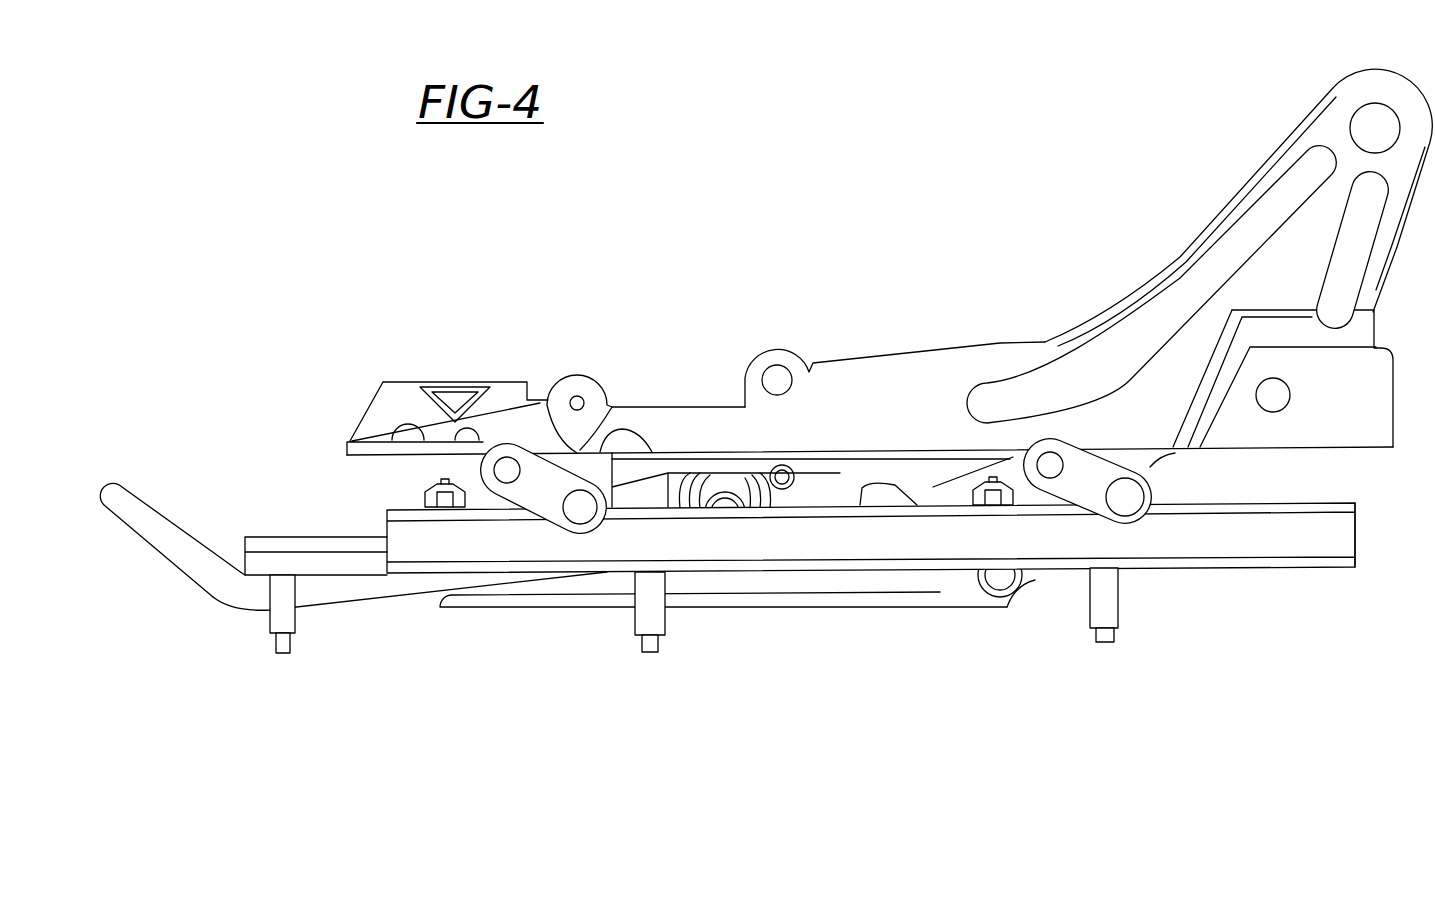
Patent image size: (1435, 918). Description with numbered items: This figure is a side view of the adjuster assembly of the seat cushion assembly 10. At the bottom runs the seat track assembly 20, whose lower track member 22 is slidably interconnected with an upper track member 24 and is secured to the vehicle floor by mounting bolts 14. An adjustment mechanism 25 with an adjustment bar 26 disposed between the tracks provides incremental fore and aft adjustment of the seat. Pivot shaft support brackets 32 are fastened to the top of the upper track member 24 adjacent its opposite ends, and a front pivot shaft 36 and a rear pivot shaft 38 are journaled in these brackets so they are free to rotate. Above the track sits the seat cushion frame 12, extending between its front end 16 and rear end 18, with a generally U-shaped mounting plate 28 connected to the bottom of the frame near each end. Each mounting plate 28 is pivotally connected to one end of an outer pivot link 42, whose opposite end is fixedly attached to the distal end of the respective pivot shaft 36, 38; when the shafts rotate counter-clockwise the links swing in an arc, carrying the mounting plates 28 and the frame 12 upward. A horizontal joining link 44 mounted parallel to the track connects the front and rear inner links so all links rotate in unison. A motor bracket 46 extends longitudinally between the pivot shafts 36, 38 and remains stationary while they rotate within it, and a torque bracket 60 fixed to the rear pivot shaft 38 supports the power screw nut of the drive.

The seat cushion assembly 10 is at (1035, 178).
The seat cushion frame 12 is at (1003, 343).
The mounting bolts 14 is at (298, 627).
The front end 16 is at (347, 444).
The rear end 18 is at (1388, 452).
The seat track assembly 20 is at (1312, 543).
The lower track member 22 is at (262, 536).
The upper track member 24 is at (1340, 572).
The adjustment mechanism 25 is at (229, 606).
The adjustment bar 26 is at (152, 512).
The mounting plate 28 is at (580, 458).
The pivot shaft support bracket 32 is at (492, 505).
The front pivot shaft 36 is at (507, 470).
The rear pivot shaft 38 is at (1053, 460).
The outer pivot link 42 is at (567, 513).
The horizontal joining link 44 is at (900, 607).
The motor bracket 46 is at (677, 456).
The torque bracket 60 is at (950, 483).